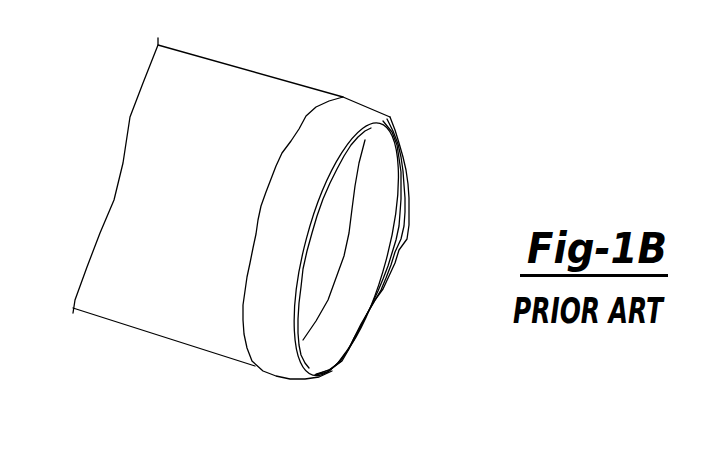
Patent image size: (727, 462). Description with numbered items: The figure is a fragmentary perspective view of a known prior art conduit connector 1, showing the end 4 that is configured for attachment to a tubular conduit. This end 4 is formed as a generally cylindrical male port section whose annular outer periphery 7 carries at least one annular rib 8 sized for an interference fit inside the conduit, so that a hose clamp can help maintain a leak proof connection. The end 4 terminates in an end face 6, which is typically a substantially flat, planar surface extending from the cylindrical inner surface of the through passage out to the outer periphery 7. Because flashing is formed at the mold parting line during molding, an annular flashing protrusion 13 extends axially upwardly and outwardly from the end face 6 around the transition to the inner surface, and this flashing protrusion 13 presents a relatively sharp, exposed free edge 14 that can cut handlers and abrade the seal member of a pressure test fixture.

The conduit connector 1 is at (269, 220).
The annular outer periphery 7 is at (231, 197).
The annular rib 8 is at (347, 97).
The end face 6 is at (400, 108).
The end 4 is at (402, 137).
The flashing protrusion 13 is at (363, 311).
The sharp free edge 14 is at (355, 361).